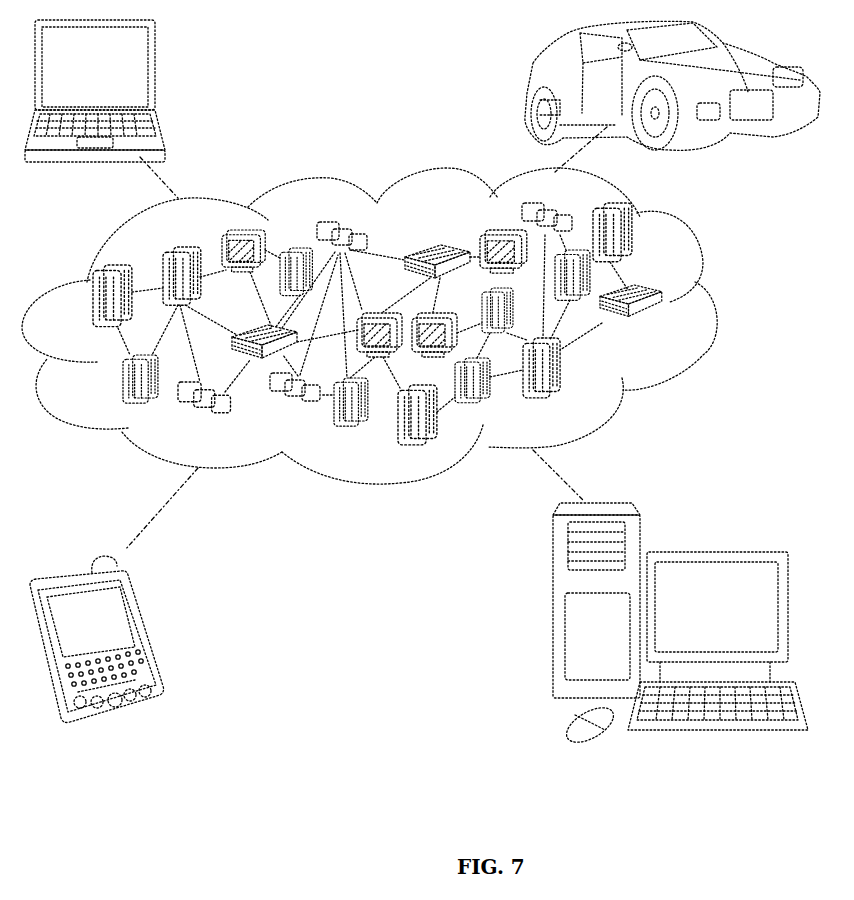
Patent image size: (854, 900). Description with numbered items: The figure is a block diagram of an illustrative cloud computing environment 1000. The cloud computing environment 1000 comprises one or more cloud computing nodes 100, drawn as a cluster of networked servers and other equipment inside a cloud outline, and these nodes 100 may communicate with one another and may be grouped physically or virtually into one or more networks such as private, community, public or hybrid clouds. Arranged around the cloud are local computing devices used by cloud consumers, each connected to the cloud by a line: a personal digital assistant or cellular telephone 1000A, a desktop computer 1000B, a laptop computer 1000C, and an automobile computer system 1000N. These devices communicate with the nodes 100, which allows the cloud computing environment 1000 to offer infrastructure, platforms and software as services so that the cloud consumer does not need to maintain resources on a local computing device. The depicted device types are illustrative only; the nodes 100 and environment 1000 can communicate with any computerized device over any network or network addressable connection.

The cloud computing environment 1000 is at (718, 304).
The cloud computing nodes 100 is at (674, 333).
The personal digital assistant (PDA) or cellular telephone 1000A is at (147, 630).
The desktop computer 1000B is at (713, 552).
The laptop computer 1000C is at (156, 75).
The automobile computer system 1000N is at (528, 86).